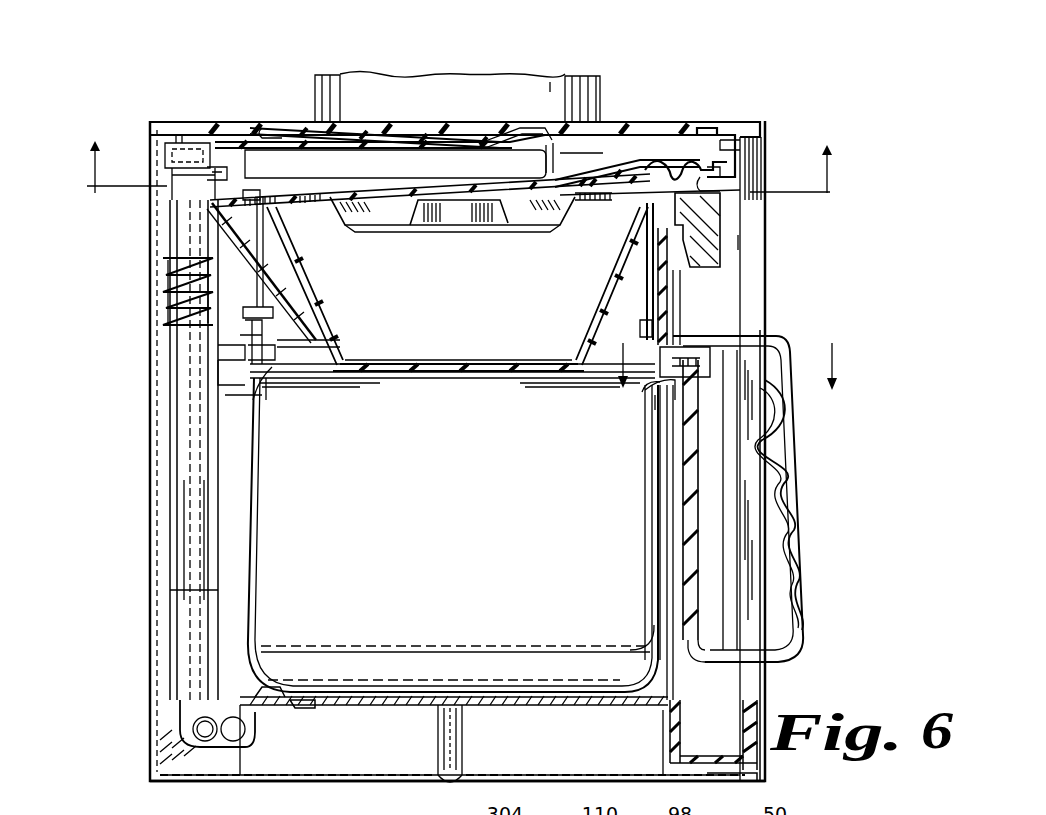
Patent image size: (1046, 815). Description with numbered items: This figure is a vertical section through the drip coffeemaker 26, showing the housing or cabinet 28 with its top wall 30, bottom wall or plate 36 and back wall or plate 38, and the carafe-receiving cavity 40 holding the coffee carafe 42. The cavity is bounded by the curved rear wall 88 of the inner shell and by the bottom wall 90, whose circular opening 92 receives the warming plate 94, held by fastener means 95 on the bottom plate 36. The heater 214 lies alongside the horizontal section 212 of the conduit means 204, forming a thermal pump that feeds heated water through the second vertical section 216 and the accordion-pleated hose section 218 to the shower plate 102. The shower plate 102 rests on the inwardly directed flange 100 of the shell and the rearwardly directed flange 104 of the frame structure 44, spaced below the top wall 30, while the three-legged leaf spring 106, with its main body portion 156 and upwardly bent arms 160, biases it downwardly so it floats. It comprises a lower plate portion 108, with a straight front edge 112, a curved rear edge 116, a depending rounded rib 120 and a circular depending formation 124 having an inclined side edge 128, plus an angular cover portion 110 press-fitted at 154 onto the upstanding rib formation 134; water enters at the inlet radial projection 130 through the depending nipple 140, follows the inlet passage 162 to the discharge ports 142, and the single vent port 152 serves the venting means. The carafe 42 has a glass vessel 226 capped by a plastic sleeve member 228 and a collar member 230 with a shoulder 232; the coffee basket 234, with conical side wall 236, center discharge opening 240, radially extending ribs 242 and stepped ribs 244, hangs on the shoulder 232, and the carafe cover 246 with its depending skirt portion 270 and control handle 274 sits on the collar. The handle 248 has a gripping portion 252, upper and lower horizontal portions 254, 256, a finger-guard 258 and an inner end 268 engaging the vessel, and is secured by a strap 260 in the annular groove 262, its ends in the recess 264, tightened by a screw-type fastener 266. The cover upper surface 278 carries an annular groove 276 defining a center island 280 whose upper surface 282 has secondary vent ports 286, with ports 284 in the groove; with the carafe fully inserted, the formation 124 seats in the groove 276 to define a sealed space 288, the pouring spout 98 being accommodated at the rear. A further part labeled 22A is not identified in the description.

The drip coffeemaker 26 is at (872, 249).
The housing or cabinet 28 is at (148, 522).
The top wall 30 is at (620, 148).
The bottom wall or plate 36 is at (327, 786).
The back wall or plate 38 is at (155, 440).
The carafe-receiving cavity 40 is at (250, 590).
The coffee carafe 42 is at (252, 556).
The frame structure 44 is at (766, 123).
The curved rear wall 88 is at (210, 475).
The bottom wall 90 is at (680, 690).
The circular opening 92 is at (264, 704).
The warming plate 94 is at (367, 707).
The fastener means 95 is at (447, 778).
The pouring spout 98 is at (214, 236).
The inwardly directed flange 100 is at (180, 138).
The shower plate 102 is at (274, 146).
The rearwardly directed flange 104 is at (740, 177).
The three-legged leaf spring 106 is at (407, 140).
The lower plate portion 108 is at (610, 162).
The angular cover portion 110 is at (265, 128).
The straight front edge 112 is at (743, 155).
The curved rear edge 116 is at (163, 167).
The depending rounded rib 120 is at (686, 178).
The circular depending formation 124 is at (347, 210).
The curved and inclined side edge 128 is at (580, 203).
The radial projection 130 is at (162, 160).
The upstanding rib formation 134 is at (582, 76).
The depending nipple 140 is at (167, 175).
The discharge ports 142 is at (381, 173).
The single vent port 152 is at (425, 173).
The press fit 154 is at (546, 160).
The main body portion 156 is at (438, 140).
The upwardly bent arms 160 is at (343, 104).
The inlet passage 162 is at (290, 196).
The conduit means 204 is at (182, 637).
The horizontal section 212 is at (193, 703).
The heater 214 is at (205, 742).
The second vertical section 216 is at (185, 592).
The accordion-pleated hose section 218 is at (165, 300).
The glass vessel 226 is at (262, 525).
The plastic sleeve member 228 is at (298, 345).
The collar member 230 is at (668, 298).
The shoulder 232 is at (655, 307).
The coffee basket 234 is at (320, 322).
The conical side wall 236 is at (598, 318).
The center discharge opening 240 is at (457, 380).
The radially extending ribs 242 is at (411, 364).
The stepped ribs 244 is at (307, 368).
The carafe cover 246 is at (668, 160).
The handle 248 is at (804, 483).
The gripping portion 252 is at (797, 567).
The upper horizontal portion 254 is at (717, 382).
The lower horizontal portion 256 is at (762, 663).
The finger-guard 258 is at (685, 533).
The metal strap or band 260 is at (243, 350).
The annular groove 262 is at (247, 370).
The recess 264 is at (707, 364).
The screw-type fastener 266 is at (800, 356).
The inner end 268 is at (657, 660).
The depending skirt portion 270 is at (675, 287).
The control handle 274 is at (705, 238).
The annular groove 276 is at (362, 225).
The upper surface 278 is at (270, 192).
The center island 280 is at (505, 226).
The upper surface 282 is at (436, 215).
The ports 284 is at (548, 222).
The secondary vent ports 286 is at (477, 216).
The sealed space 288 is at (378, 208).
The pump rollers 22A is at (245, 734).